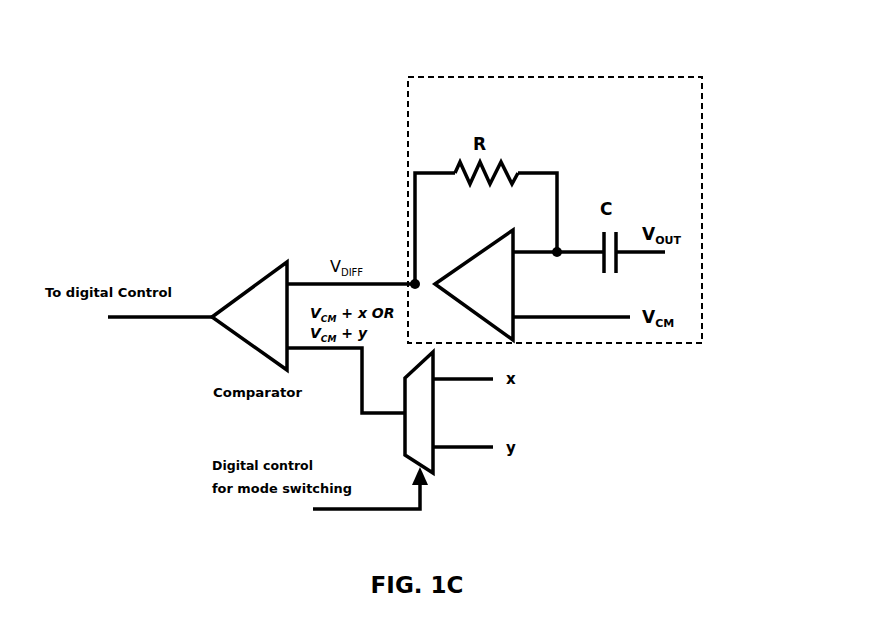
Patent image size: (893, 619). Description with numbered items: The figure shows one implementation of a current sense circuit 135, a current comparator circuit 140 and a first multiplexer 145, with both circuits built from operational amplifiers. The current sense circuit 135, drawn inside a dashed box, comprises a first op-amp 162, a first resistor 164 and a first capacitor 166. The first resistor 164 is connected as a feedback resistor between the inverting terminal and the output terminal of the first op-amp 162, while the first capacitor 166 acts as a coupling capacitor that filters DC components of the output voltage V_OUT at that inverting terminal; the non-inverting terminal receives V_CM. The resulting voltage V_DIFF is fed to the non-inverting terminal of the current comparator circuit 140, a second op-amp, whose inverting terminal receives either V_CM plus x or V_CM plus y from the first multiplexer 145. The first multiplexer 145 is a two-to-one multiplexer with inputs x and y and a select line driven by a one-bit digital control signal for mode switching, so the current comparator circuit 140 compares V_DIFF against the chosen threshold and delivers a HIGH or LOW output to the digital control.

The current sense circuit 135 is at (663, 77).
The current comparator circuit 140 is at (275, 272).
The first multiplexer 145 is at (430, 472).
The first op-amp 162 is at (463, 260).
The first resistor 164 is at (498, 160).
The first capacitor 166 is at (610, 230).